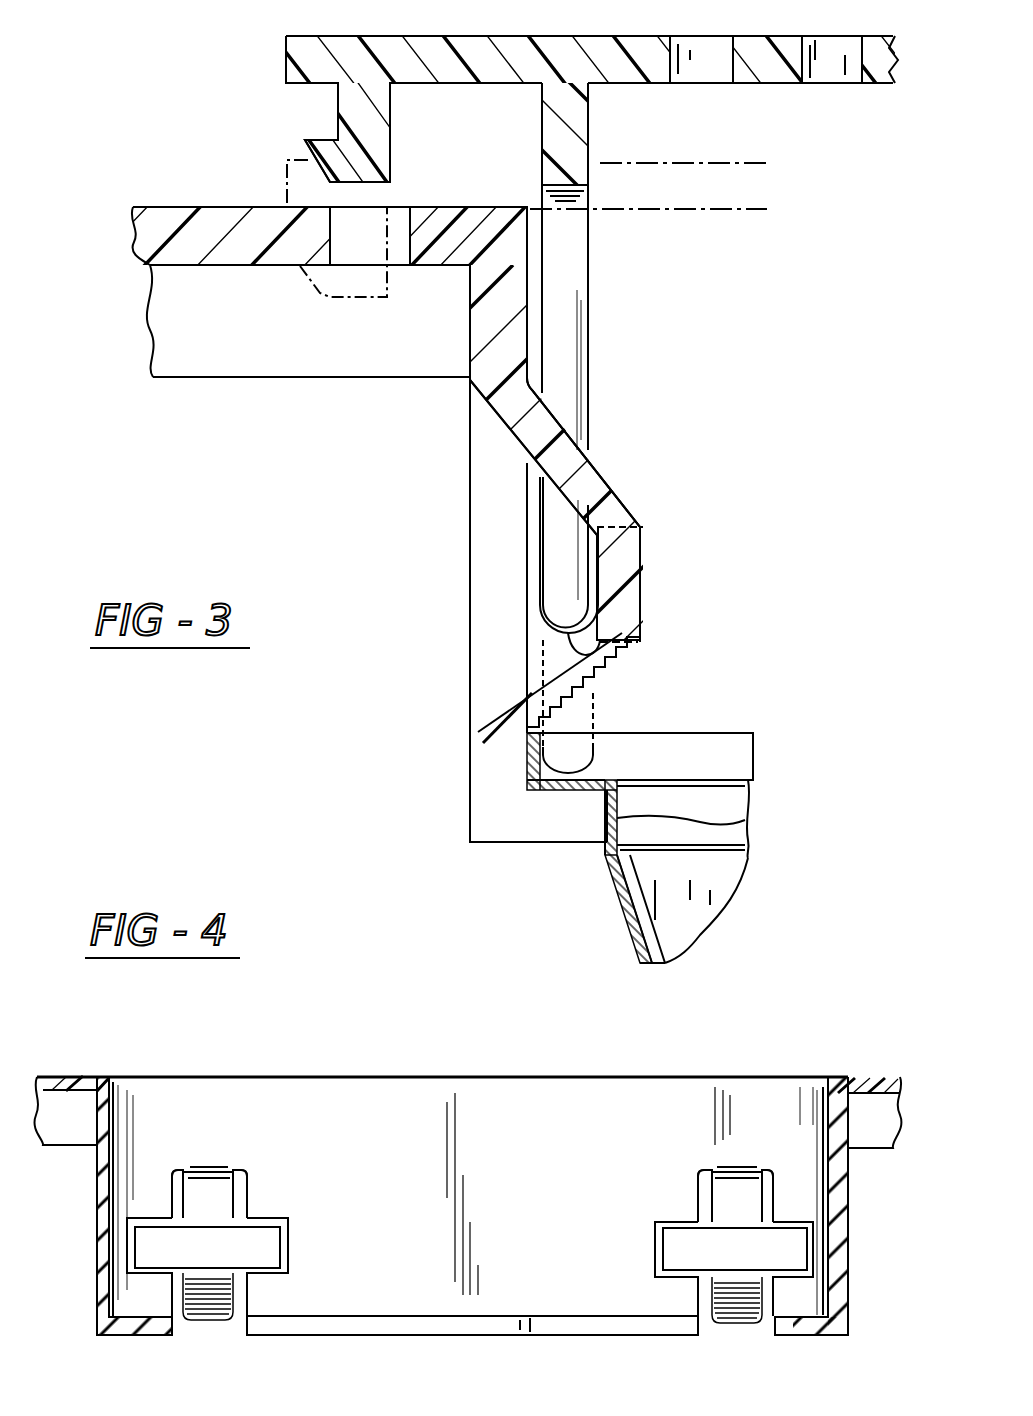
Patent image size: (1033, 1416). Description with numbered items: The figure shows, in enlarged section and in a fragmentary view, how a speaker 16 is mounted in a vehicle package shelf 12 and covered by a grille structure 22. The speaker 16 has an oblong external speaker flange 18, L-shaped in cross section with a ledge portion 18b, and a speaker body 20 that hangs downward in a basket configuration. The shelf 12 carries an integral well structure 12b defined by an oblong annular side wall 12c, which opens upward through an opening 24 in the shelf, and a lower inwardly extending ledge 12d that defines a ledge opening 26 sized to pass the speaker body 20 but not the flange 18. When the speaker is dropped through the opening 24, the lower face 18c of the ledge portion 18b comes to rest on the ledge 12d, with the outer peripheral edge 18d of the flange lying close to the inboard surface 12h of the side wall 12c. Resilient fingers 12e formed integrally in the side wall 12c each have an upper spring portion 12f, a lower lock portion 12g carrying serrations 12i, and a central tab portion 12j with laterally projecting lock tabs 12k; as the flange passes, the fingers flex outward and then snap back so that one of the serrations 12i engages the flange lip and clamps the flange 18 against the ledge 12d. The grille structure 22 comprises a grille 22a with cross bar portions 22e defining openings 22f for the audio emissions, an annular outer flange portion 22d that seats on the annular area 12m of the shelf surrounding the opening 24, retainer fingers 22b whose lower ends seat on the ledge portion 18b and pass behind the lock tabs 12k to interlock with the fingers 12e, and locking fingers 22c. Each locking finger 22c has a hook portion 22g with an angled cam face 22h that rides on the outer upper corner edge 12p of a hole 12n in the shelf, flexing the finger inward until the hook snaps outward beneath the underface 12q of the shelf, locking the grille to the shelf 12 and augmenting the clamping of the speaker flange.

In FIG. 3, the package shelf 12 is at (183, 207).
In FIG. 4, the package shelf 12 is at (96, 1076).
In FIG. 3, the well structure 12b is at (466, 400).
In FIG. 4, the well structure 12b is at (92, 1256).
In FIG. 3, the annular side wall 12c is at (468, 330).
In FIG. 4, the annular side wall 12c is at (94, 1147).
In FIG. 3, the ledge 12d is at (545, 845).
In FIG. 4, the ledge 12d is at (513, 1322).
In FIG. 3, the resilient finger 12e is at (655, 507).
In FIG. 4, the resilient finger 12e is at (285, 1208).
In FIG. 3, the upper spring portion 12f is at (588, 448).
In FIG. 4, the upper spring portion 12f is at (247, 1182).
In FIG. 3, the lower lock portion 12g is at (535, 677).
In FIG. 4, the lower lock portion 12g is at (213, 1303).
In FIG. 3, the inboard surface 12h is at (538, 580).
In FIG. 4, the inboard surface 12h is at (288, 1258).
In FIG. 3, the serrations 12i is at (612, 695).
In FIG. 3, the central tab portion 12j is at (643, 603).
In FIG. 3, the lock tabs 12k is at (645, 545).
In FIG. 4, the lock tabs 12k is at (150, 1238).
In FIG. 3, the annular area 12m is at (505, 210).
In FIG. 4, the annular area 12m is at (65, 1110).
In FIG. 3, the holes 12n is at (400, 265).
In FIG. 3, the outer upper corner edge 12p is at (338, 298).
In FIG. 3, the underface 12q is at (196, 265).
In FIG. 3, the speaker 16 is at (595, 925).
In FIG. 3, the speaker flange 18 is at (712, 780).
In FIG. 3, the ledge portion 18b is at (605, 778).
In FIG. 3, the lower face 18c is at (598, 777).
In FIG. 3, the outer peripheral edge 18d is at (527, 788).
In FIG. 3, the speaker body 20 is at (630, 935).
In FIG. 3, the grille structure 22 is at (262, 50).
In FIG. 3, the grille 22a is at (627, 20).
In FIG. 3, the retainer fingers 22b is at (588, 385).
In FIG. 3, the locking fingers 22c is at (300, 112).
In FIG. 3, the annular outer flange portion 22d is at (393, 35).
In FIG. 3, the cross bar portions 22e is at (862, 84).
In FIG. 3, the openings 22f is at (812, 84).
In FIG. 3, the hook portion 22g is at (290, 152).
In FIG. 3, the angled cam face 22h is at (318, 160).
In FIG. 3, the opening 24 is at (540, 232).
In FIG. 3, the ledge opening 26 is at (748, 820).
In FIG. 4, the ledge opening 26 is at (169, 1335).